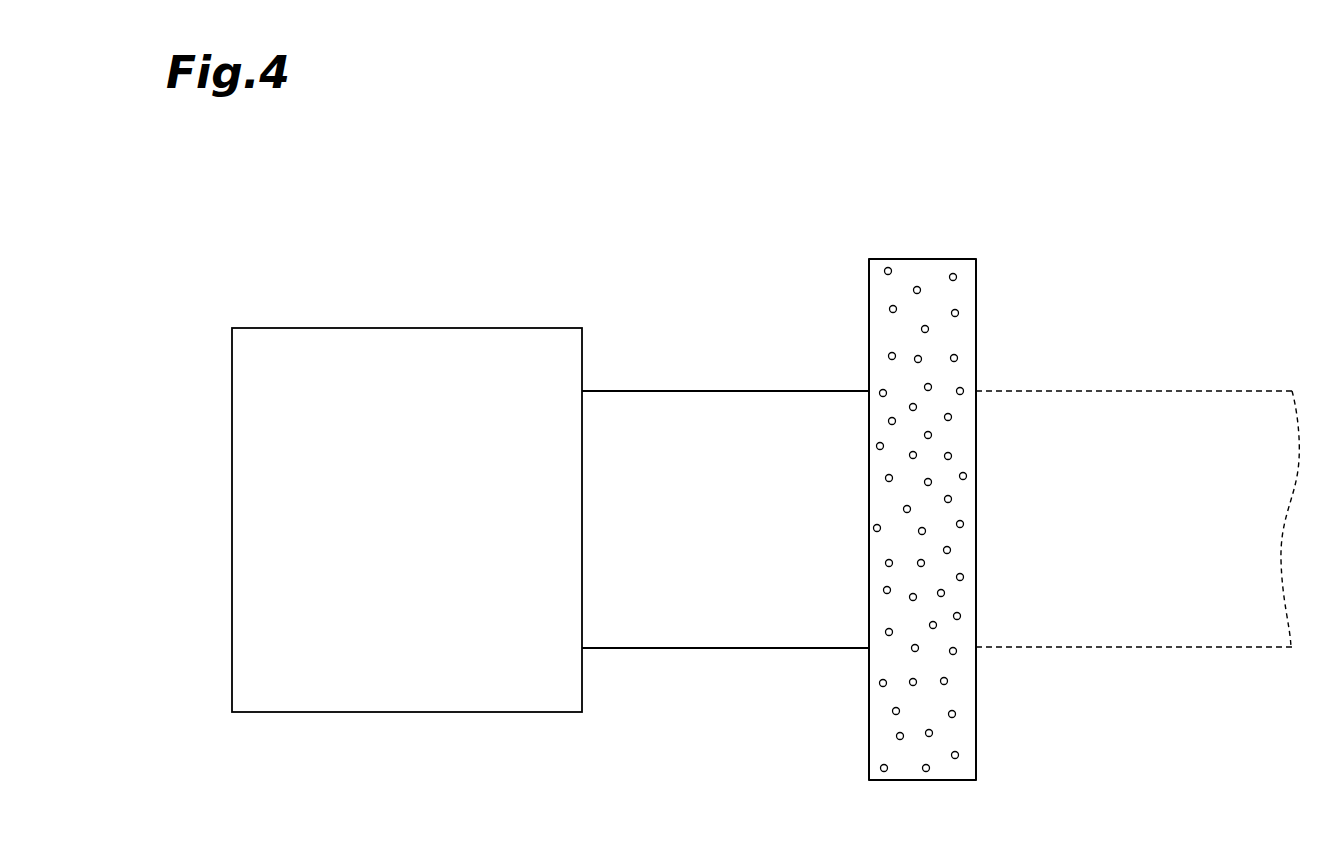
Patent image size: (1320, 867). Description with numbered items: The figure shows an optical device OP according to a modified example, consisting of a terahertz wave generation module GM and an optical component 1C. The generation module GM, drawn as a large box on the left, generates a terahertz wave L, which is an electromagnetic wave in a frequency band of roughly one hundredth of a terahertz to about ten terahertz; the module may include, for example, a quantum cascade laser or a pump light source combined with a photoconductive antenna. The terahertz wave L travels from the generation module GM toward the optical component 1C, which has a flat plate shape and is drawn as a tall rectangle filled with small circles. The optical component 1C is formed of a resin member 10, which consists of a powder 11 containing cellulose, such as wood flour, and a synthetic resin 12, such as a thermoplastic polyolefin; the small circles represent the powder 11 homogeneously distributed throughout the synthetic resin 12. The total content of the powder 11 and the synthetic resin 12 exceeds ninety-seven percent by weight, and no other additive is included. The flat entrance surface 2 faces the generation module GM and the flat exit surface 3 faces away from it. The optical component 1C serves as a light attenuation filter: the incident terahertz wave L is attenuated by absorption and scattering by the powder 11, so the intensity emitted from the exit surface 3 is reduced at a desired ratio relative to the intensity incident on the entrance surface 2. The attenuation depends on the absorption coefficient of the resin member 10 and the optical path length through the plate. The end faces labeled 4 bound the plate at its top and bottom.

The terahertz wave generation module GM is at (488, 328).
The terahertz wave L is at (645, 390).
The optical device OP is at (1102, 172).
The optical component 1C is at (976, 270).
The entrance surface 2 is at (869, 728).
The exit surface 3 is at (976, 724).
The end faces 4 is at (908, 259).
The resin member 10 is at (975, 520).
The powder 11 is at (959, 359).
The synthetic resin 12 is at (950, 297).